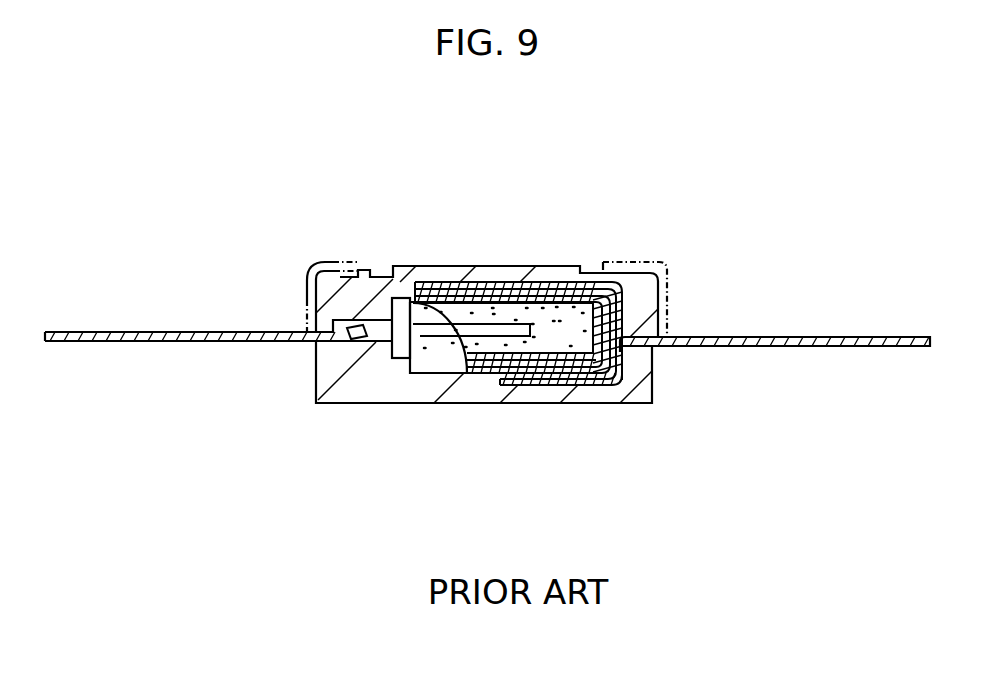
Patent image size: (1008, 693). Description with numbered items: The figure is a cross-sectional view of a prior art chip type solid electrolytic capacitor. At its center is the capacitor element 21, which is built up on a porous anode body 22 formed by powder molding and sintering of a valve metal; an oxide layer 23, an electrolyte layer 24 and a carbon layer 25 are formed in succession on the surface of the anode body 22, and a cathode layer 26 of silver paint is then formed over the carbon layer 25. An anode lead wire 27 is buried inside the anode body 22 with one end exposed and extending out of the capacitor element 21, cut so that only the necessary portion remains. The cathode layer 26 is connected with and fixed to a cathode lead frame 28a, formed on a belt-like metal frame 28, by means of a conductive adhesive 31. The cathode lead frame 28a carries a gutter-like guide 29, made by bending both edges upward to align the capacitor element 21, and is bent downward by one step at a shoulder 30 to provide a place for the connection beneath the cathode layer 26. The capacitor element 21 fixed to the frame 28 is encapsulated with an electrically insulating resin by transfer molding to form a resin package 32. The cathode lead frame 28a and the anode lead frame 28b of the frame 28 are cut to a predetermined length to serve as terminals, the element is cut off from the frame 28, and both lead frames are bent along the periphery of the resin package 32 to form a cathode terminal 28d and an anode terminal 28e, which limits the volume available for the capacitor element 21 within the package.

The capacitor element 21 is at (435, 358).
The porous anode body 22 is at (456, 300).
The oxide layer 23 is at (481, 297).
The electrolyte layer 24 is at (522, 297).
The carbon layer 25 is at (560, 285).
The cathode layer 26 is at (420, 283).
The anode lead wire 27 is at (372, 325).
The frame 28 is at (70, 335).
The cathode lead frame 28a is at (777, 338).
The anode lead frame 28b is at (213, 342).
The cathode terminal 28d is at (632, 265).
The anode terminal 28e is at (325, 262).
The gutter-like guide 29 is at (500, 385).
The shoulder 30 is at (620, 363).
The conductive adhesive 31 is at (548, 387).
The resin package 32 is at (362, 387).